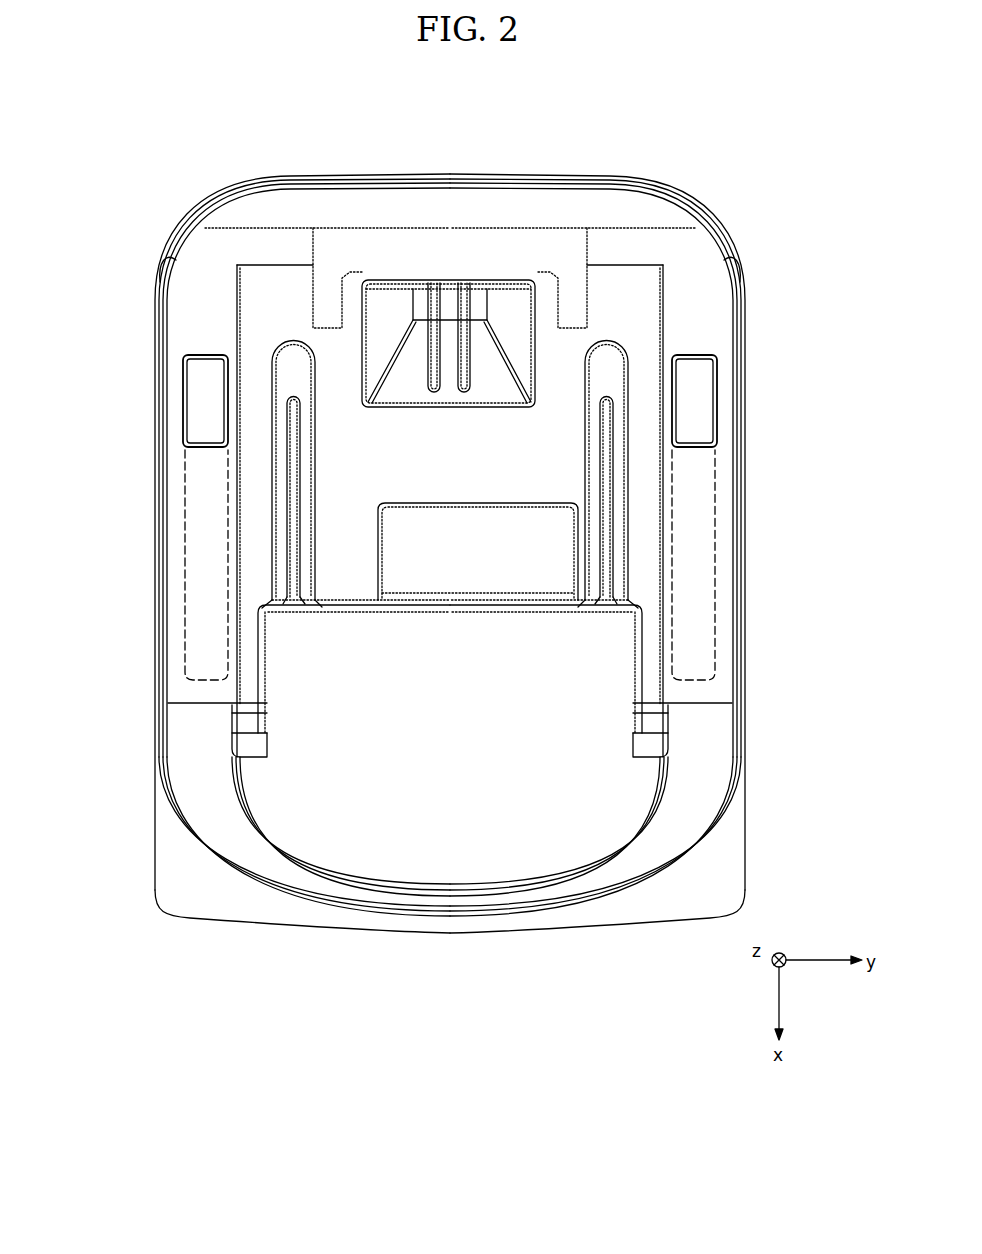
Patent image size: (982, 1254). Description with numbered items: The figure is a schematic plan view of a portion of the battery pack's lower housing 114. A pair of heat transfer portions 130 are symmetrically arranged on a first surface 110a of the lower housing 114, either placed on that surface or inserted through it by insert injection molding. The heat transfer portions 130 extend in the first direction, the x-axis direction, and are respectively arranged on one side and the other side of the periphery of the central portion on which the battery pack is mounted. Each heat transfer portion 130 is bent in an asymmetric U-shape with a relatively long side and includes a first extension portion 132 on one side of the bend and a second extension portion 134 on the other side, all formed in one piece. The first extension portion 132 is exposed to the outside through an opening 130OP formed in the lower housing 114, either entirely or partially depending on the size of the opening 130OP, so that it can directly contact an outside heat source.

The lower housing 114 is at (687, 174).
The first surface 110a is at (180, 690).
The heat transfer portion 130 is at (454, 517).
The first extension portion 132 is at (703, 428).
The second extension portion 134 is at (713, 518).
The opening 130OP is at (185, 402).